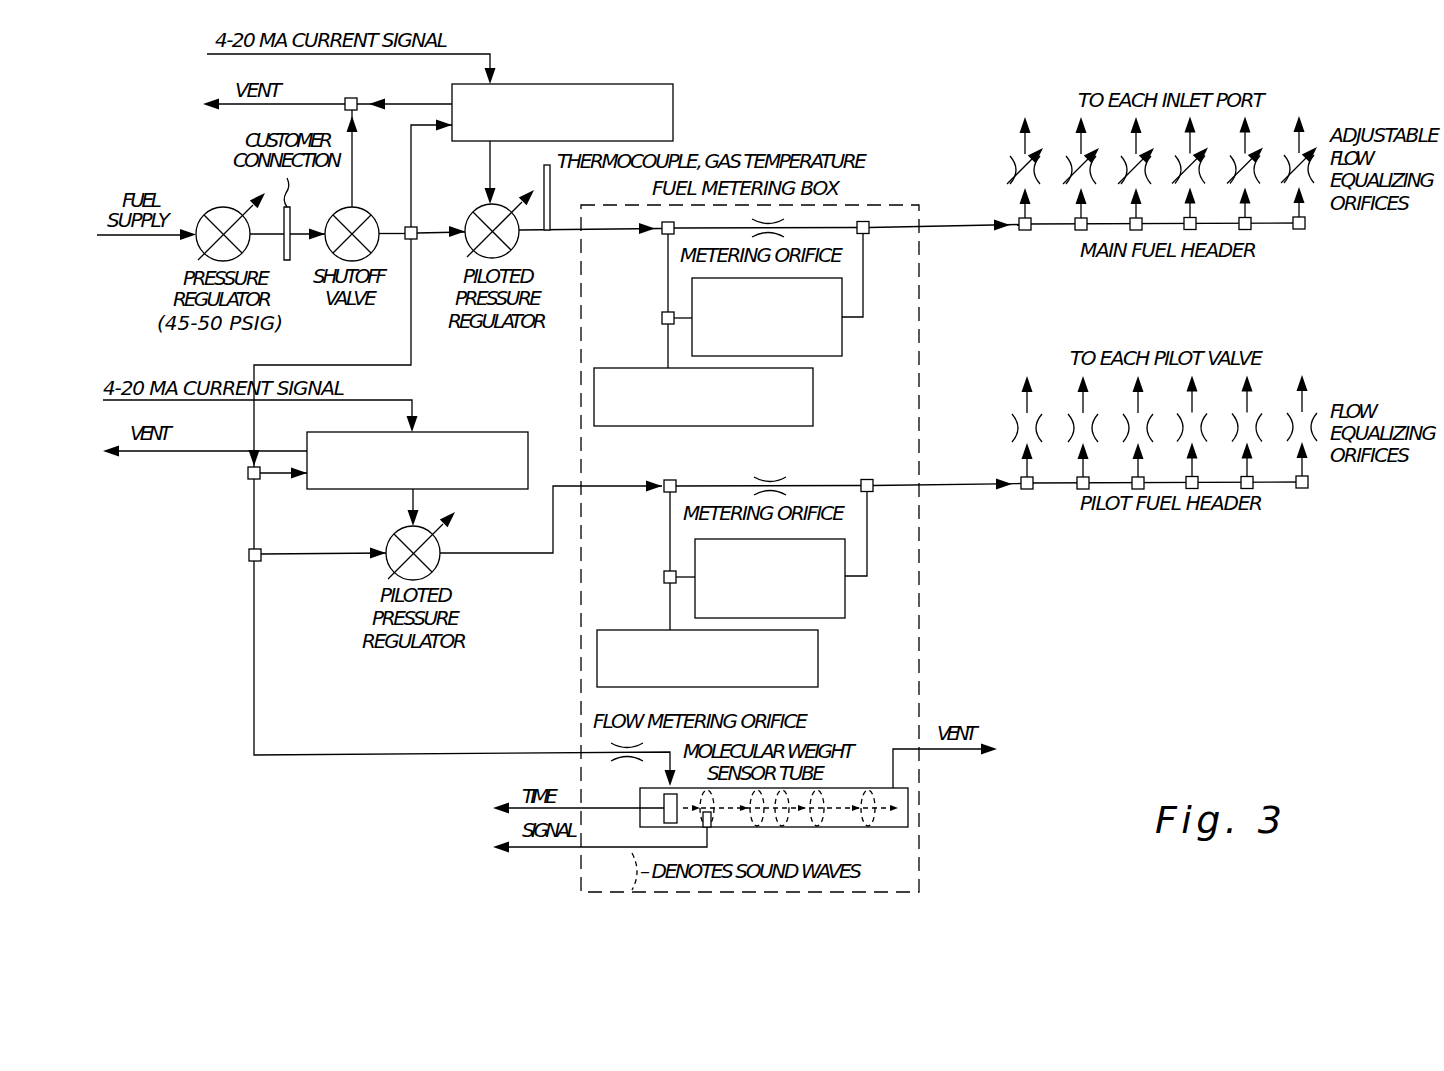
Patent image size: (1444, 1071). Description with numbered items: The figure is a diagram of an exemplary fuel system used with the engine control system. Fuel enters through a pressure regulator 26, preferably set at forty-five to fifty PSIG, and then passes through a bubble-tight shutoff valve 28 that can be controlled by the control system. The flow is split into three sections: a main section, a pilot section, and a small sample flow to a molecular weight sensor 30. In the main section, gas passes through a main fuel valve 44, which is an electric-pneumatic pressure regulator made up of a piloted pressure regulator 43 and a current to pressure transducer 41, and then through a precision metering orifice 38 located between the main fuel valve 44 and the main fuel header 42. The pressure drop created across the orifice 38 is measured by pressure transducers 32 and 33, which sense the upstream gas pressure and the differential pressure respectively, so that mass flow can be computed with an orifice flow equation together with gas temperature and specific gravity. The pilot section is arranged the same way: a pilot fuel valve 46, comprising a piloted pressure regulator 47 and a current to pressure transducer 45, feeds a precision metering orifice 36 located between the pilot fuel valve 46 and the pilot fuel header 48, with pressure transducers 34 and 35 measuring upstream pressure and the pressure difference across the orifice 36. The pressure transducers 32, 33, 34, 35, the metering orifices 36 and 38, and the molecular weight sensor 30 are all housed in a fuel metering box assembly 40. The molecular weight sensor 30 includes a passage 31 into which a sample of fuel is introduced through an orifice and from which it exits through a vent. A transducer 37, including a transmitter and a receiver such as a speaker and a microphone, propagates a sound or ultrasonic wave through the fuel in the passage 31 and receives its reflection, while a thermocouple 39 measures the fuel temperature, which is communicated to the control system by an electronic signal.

The pressure regulator 26 is at (224, 208).
The shutoff valve 28 is at (361, 210).
The molecular weight sensor 30 is at (870, 776).
The passage 31 is at (887, 800).
The pressure transducer 32 is at (813, 393).
The pressure transducer 33 is at (842, 335).
The pressure transducer 34 is at (818, 652).
The pressure transducer 35 is at (845, 590).
The metering orifice 36 is at (774, 476).
The transducer 37 is at (664, 800).
The metering orifice 38 is at (750, 233).
The thermocouple 39 is at (703, 818).
The fuel metering box assembly 40 is at (908, 205).
The current to pressure transducer 41 is at (673, 107).
The main fuel header 42 is at (1076, 280).
The piloted pressure regulator 43 is at (478, 212).
The main fuel valve 44 is at (490, 172).
The current to pressure transducer 45 is at (487, 432).
The pilot fuel valve 46 is at (410, 505).
The piloted pressure regulator 47 is at (440, 545).
The pilot fuel header 48 is at (1040, 537).